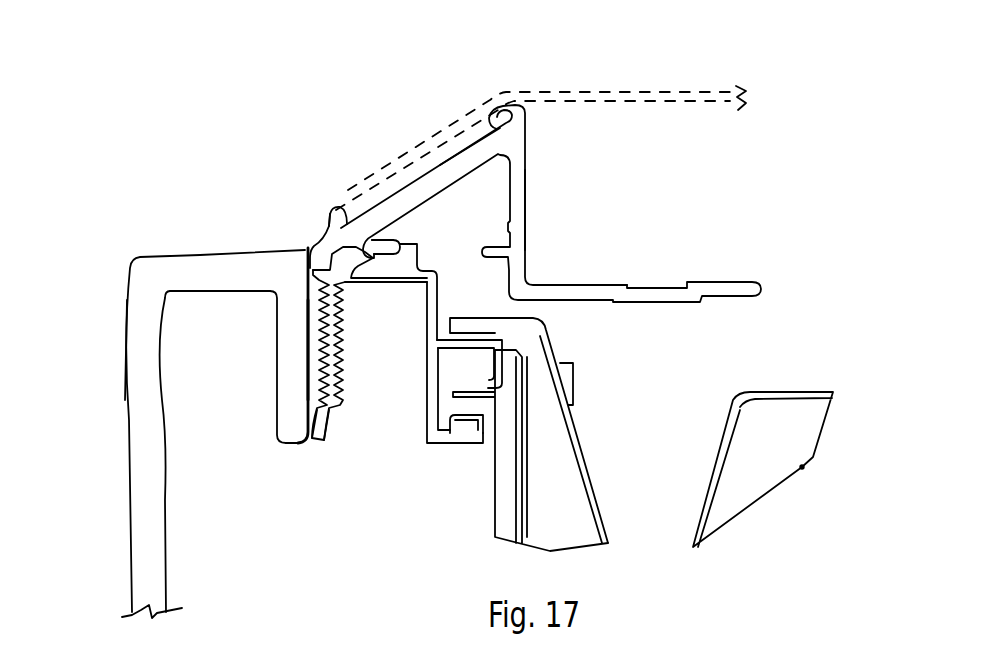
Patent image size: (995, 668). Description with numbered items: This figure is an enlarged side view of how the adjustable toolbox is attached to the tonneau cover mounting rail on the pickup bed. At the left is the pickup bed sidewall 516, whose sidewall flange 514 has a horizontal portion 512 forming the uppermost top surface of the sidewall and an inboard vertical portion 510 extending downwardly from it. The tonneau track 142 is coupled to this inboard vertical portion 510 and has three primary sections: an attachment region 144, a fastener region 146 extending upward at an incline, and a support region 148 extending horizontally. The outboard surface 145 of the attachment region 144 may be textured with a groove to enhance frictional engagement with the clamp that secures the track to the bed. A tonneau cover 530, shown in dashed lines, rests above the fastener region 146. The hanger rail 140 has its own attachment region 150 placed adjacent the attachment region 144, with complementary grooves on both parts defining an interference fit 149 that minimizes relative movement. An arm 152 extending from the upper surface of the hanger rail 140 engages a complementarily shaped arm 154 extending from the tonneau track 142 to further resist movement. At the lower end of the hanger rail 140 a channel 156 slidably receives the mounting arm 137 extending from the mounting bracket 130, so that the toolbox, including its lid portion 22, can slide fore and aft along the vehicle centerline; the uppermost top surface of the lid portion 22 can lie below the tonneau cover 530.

The lid portion 22 is at (776, 392).
The mounting bracket 130 is at (507, 522).
The mounting arm 137 is at (582, 493).
The hanger rail 140 is at (429, 412).
The tonneau track 142 is at (524, 190).
The attachment region 144 is at (307, 347).
The outboard surface 145 is at (306, 264).
The fastener region 146 is at (437, 171).
The support region 148 is at (657, 285).
The interference fit 149 is at (315, 446).
The attachment region 150 is at (341, 368).
The arm 152 is at (408, 241).
The arm 154 is at (377, 256).
The channel 156 is at (477, 431).
The inboard vertical portion 510 is at (283, 438).
The horizontal portion 512 is at (198, 270).
The sidewall flange 514 is at (144, 210).
The sidewall 516 is at (100, 324).
The tonneau cover 530 is at (667, 93).